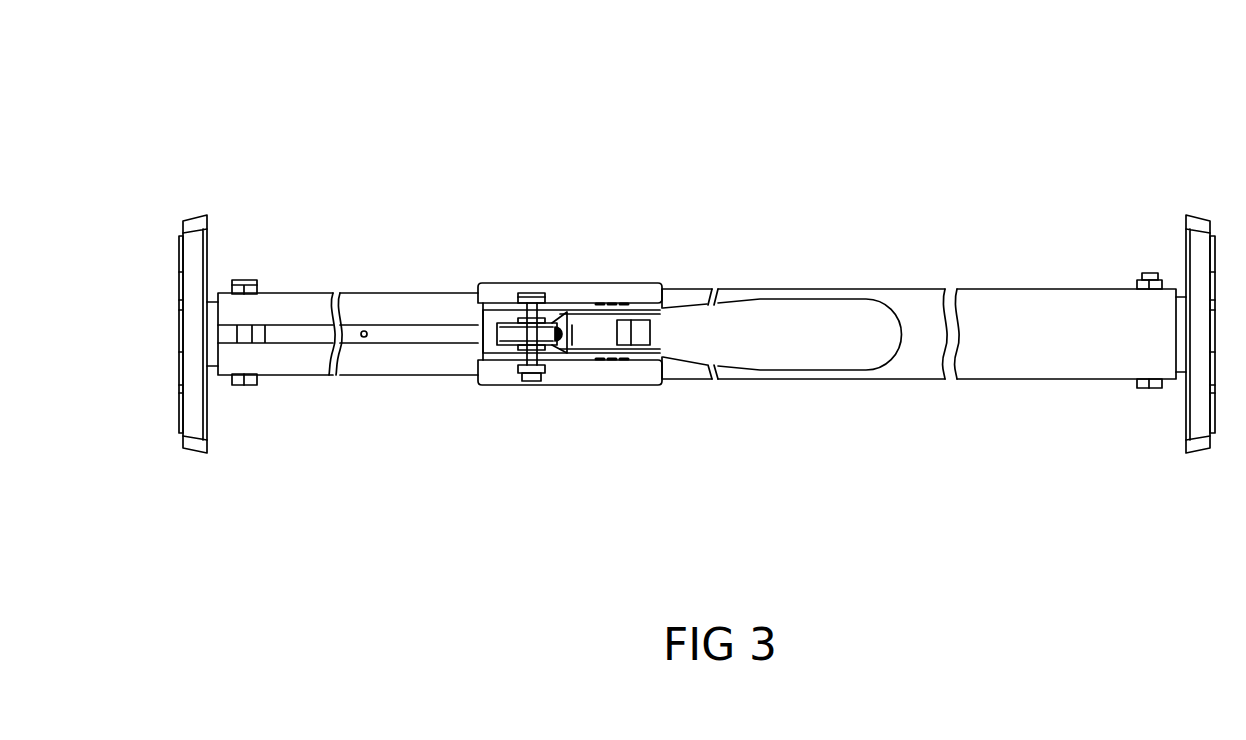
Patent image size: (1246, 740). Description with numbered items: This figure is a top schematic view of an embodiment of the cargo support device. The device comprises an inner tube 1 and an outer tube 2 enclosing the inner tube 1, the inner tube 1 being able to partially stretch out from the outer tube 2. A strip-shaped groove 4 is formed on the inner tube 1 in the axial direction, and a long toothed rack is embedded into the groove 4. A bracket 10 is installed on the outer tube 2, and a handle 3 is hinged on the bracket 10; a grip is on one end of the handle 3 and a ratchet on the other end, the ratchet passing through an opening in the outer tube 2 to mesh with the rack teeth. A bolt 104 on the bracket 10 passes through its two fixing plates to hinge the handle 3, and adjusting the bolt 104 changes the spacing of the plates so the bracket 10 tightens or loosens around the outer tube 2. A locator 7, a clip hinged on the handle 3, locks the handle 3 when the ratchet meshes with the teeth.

The inner tube 1 is at (301, 313).
The outer tube 2 is at (1008, 313).
The handle 3 is at (825, 322).
The strip-shaped groove 4 is at (313, 333).
The locator 7 is at (638, 332).
The bracket 10 is at (498, 302).
The bolt 104 is at (528, 365).